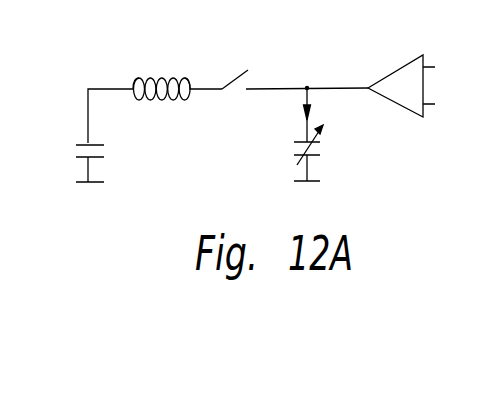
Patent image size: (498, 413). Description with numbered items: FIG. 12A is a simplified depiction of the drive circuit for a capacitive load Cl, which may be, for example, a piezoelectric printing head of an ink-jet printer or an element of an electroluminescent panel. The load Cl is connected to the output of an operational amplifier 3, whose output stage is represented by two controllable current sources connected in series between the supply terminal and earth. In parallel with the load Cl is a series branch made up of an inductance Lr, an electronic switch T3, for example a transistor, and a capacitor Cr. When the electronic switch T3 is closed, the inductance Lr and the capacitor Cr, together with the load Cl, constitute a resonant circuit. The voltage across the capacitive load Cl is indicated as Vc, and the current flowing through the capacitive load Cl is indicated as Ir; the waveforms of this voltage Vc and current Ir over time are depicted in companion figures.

The operational amplifier 3 is at (410, 83).
The capacitor Cr is at (88, 135).
The inductance Lr is at (177, 72).
The electronic switch T3 is at (295, 66).
The voltage across the capacitive load Vc is at (310, 65).
The current through the capacitive load Ir is at (291, 115).
The capacitive load Cl is at (322, 153).